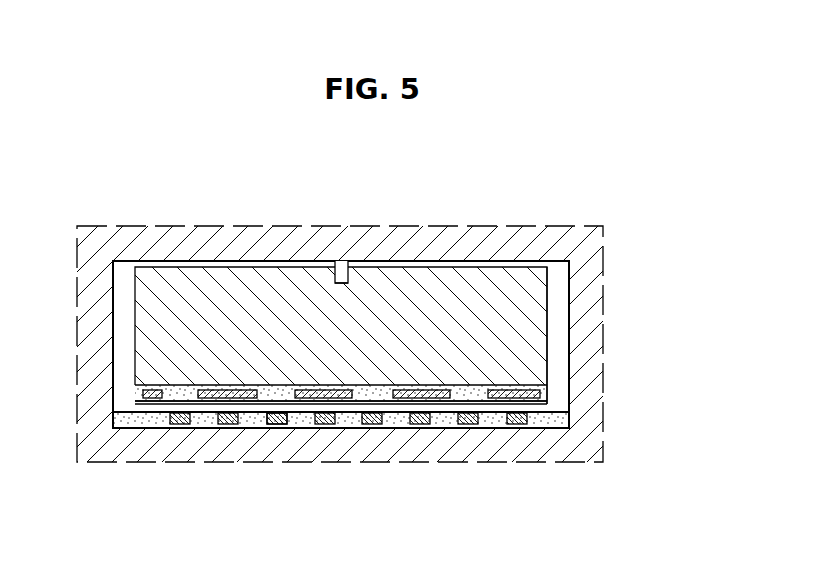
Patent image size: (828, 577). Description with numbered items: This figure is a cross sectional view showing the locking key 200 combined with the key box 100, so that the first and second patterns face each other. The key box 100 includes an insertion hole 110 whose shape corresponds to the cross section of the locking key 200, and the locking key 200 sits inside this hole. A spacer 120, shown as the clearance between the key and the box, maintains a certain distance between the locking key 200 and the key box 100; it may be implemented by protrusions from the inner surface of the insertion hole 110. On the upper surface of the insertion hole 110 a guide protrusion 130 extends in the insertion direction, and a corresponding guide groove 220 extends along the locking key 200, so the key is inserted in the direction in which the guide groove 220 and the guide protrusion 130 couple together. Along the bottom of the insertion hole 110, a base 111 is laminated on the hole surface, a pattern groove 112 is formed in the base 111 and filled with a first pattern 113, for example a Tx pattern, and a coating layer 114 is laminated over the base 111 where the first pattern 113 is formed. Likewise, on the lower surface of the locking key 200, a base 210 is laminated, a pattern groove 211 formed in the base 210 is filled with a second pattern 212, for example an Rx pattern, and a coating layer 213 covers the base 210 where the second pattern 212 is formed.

The key box 100 is at (224, 233).
The insertion hole 110 is at (113, 283).
The base 111 is at (208, 417).
The pattern groove 112 is at (275, 420).
The first pattern 113 is at (182, 417).
The coating layer 114 is at (132, 413).
The spacer 120 is at (558, 371).
The guide protrusion 130 is at (341, 272).
The locking key 200 is at (417, 277).
The base 210 is at (382, 393).
The pattern groove 211 is at (492, 393).
The second pattern 212 is at (438, 394).
The coating layer 213 is at (540, 407).
The guide groove 220 is at (333, 268).